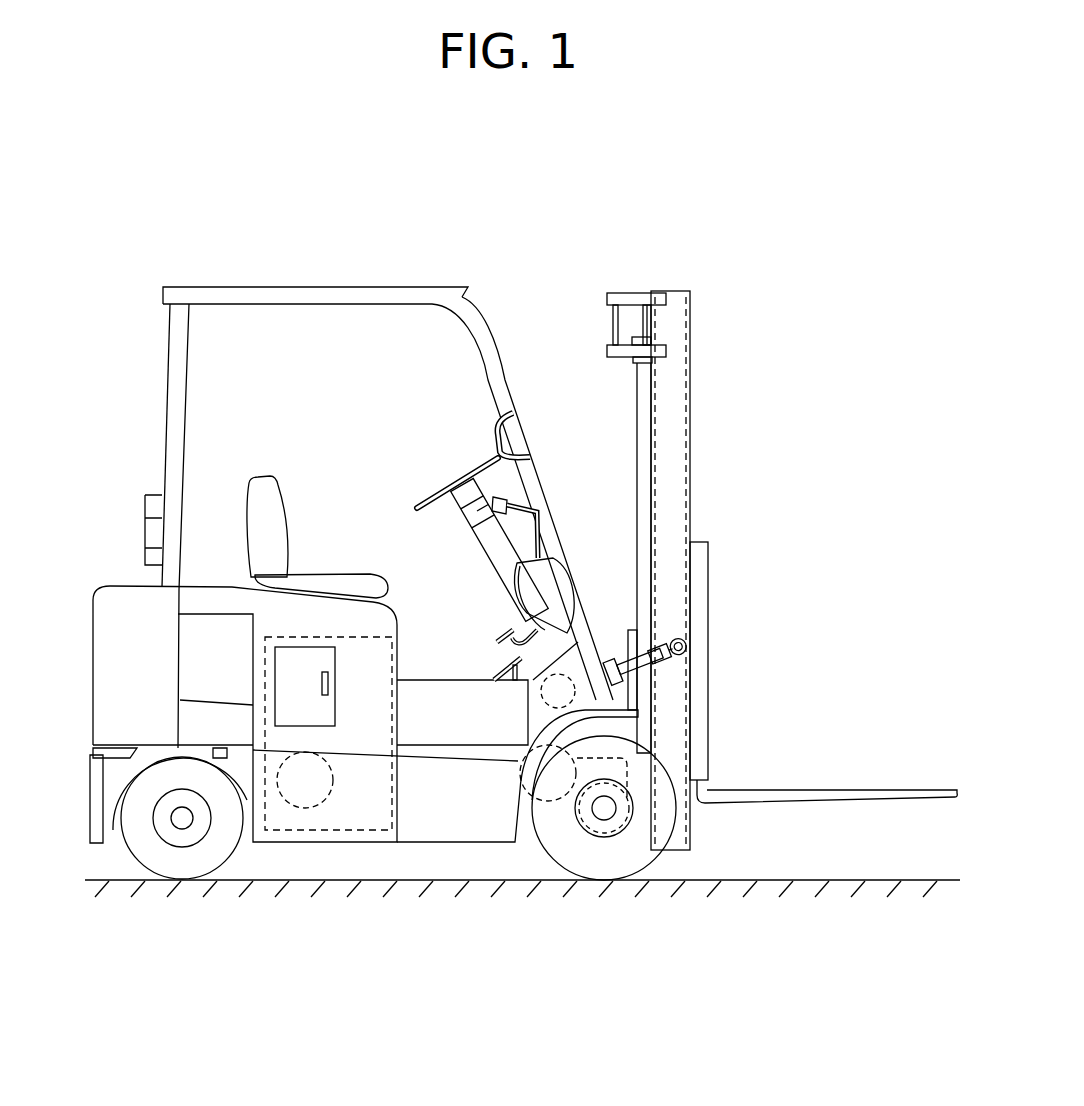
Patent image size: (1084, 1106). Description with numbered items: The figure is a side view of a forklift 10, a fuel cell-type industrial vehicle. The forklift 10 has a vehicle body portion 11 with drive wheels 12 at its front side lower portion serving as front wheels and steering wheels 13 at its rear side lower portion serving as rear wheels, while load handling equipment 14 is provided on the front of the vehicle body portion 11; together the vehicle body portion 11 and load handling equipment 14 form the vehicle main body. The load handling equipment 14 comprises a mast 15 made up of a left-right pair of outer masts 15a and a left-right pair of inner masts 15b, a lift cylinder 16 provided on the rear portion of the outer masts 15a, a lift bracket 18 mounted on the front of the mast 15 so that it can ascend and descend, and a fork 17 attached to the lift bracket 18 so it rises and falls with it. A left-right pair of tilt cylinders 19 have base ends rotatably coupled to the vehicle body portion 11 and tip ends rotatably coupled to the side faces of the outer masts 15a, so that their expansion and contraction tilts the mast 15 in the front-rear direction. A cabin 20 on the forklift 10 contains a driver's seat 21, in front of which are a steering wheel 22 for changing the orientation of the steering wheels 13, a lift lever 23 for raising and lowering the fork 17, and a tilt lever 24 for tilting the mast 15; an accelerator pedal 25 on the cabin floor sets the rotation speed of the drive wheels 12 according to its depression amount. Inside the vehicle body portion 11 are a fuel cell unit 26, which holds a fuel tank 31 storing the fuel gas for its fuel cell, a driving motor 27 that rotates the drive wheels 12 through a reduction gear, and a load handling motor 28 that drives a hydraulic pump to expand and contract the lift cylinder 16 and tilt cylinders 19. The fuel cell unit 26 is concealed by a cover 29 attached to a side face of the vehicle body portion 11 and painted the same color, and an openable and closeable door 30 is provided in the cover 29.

The forklift 10 is at (758, 325).
The vehicle body portion 11 is at (478, 843).
The drive wheels 12 is at (612, 876).
The steering wheels 13 is at (188, 876).
The load handling equipment 14 is at (558, 333).
The mast 15 is at (690, 492).
The outer masts 15a is at (690, 450).
The inner masts 15b is at (693, 383).
The lift cylinder 16 is at (636, 432).
The fork 17 is at (813, 802).
The lift bracket 18 is at (700, 712).
The tilt cylinders 19 is at (607, 655).
The cabin 20 is at (336, 392).
The driver's seat 21 is at (337, 575).
The steering wheel 22 is at (443, 496).
The lift lever 23 is at (522, 535).
The tilt lever 24 is at (525, 512).
The accelerator pedal 25 is at (500, 670).
The fuel cell unit 26 is at (362, 832).
The driving motor 27 is at (517, 767).
The load handling motor 28 is at (540, 693).
The cover 29 is at (253, 735).
The door 30 is at (273, 668).
The fuel tank 31 is at (316, 808).